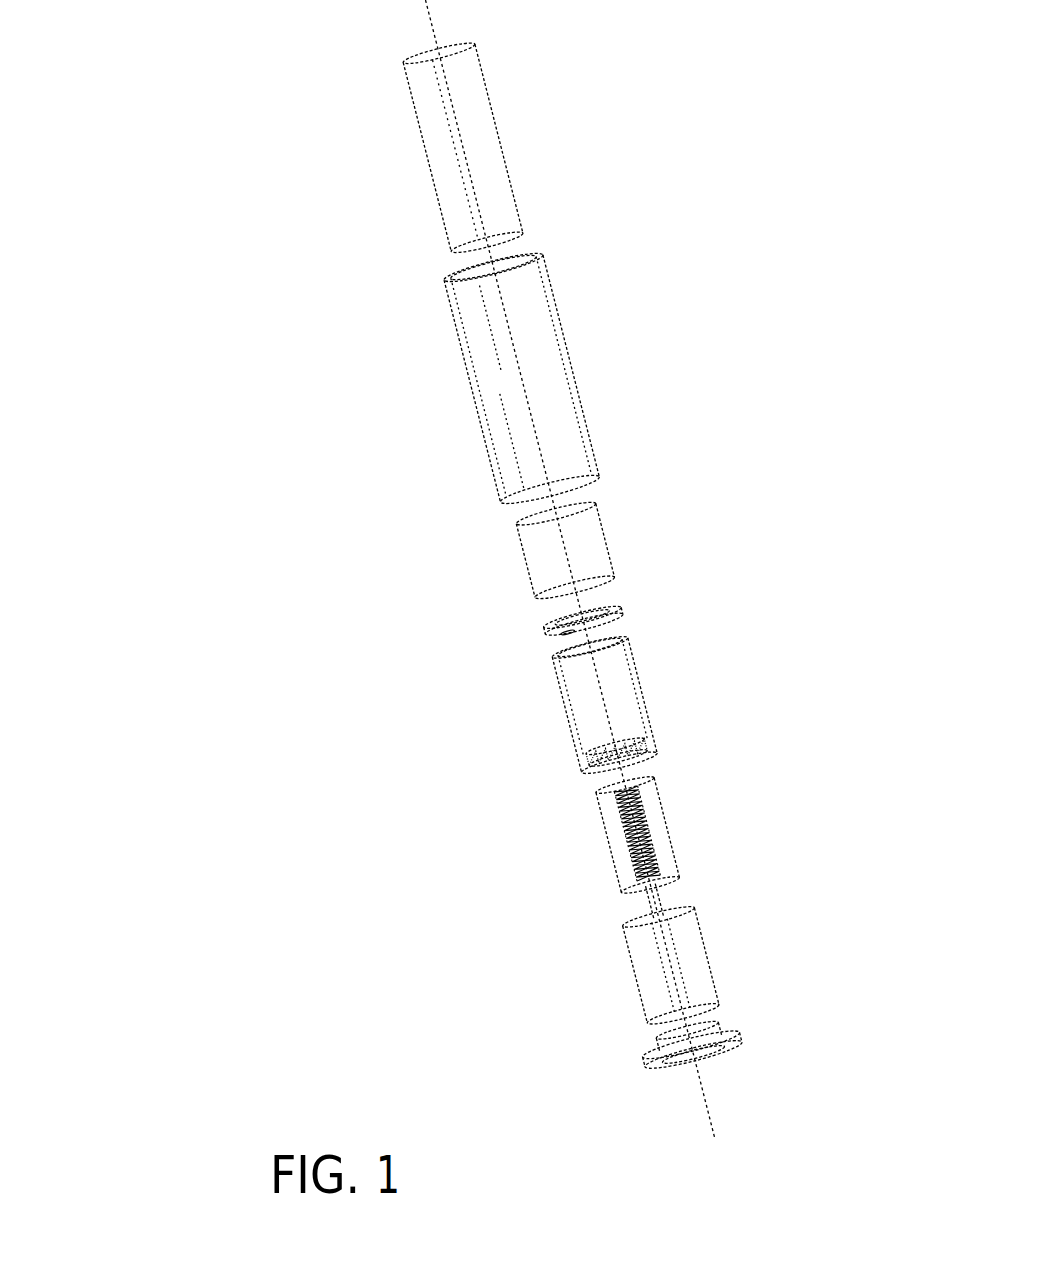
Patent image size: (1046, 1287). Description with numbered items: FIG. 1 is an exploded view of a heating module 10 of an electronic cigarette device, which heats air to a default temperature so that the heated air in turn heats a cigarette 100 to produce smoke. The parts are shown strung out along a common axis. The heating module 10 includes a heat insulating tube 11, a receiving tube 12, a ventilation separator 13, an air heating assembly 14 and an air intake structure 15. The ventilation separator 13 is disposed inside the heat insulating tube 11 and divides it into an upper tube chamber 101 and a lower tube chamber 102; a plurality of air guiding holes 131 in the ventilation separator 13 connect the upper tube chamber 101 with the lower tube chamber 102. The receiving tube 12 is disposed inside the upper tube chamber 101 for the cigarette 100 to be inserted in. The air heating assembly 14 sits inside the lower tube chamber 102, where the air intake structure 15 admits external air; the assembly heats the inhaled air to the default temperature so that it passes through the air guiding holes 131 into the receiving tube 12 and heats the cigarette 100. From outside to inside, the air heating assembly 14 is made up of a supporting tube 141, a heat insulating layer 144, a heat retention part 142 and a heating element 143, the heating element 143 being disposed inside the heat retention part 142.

The cigarette 100 is at (498, 140).
The heating module 10 is at (135, 725).
The heat insulating tube 11 is at (549, 389).
The upper tube chamber 101 is at (477, 328).
The lower tube chamber 102 is at (501, 436).
The receiving tube 12 is at (600, 527).
The ventilation separator 13 is at (608, 629).
The air guiding holes 131 is at (561, 645).
The air heating assembly 14 is at (128, 382).
The supporting tube 141 is at (650, 702).
The heat retention part 142 is at (667, 828).
The heating element 143 is at (635, 842).
The heat insulating layer 144 is at (703, 958).
The air intake structure 15 is at (737, 1045).